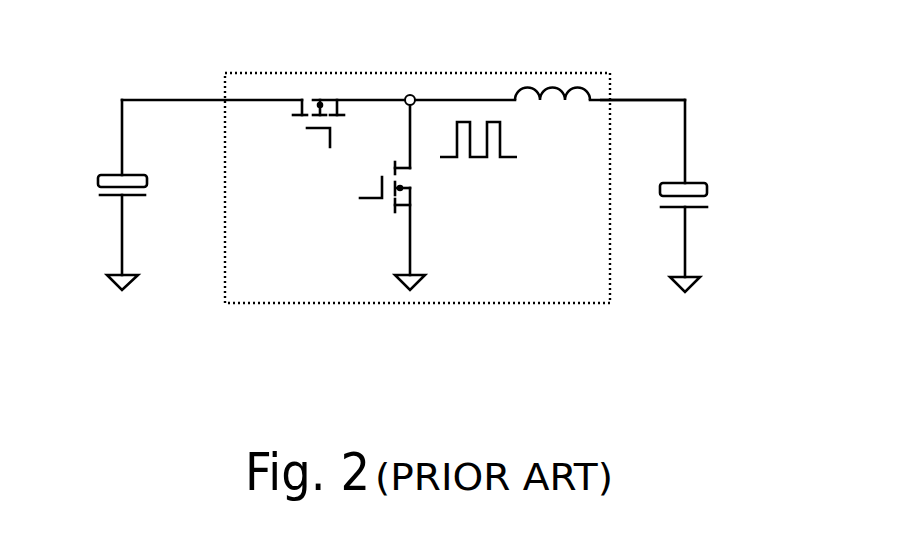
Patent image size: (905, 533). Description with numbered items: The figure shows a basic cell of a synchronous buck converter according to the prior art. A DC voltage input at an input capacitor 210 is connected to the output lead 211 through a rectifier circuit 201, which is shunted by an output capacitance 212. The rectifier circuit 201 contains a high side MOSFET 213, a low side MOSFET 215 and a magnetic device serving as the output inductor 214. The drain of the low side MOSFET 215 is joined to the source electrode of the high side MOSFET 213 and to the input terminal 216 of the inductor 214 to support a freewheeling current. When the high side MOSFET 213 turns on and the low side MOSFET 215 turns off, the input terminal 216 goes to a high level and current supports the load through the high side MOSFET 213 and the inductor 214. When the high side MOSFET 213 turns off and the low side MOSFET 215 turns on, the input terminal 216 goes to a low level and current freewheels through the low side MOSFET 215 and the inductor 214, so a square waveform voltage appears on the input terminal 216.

The rectifier circuit 201 is at (417, 154).
The input capacitor 210 is at (93, 195).
The output lead 211 is at (681, 54).
The output capacitance 212 is at (716, 196).
The high side MOSFET 213 is at (303, 133).
The inductor 214 is at (552, 113).
The low side MOSFET 215 is at (367, 203).
The input terminal 216 is at (327, 52).